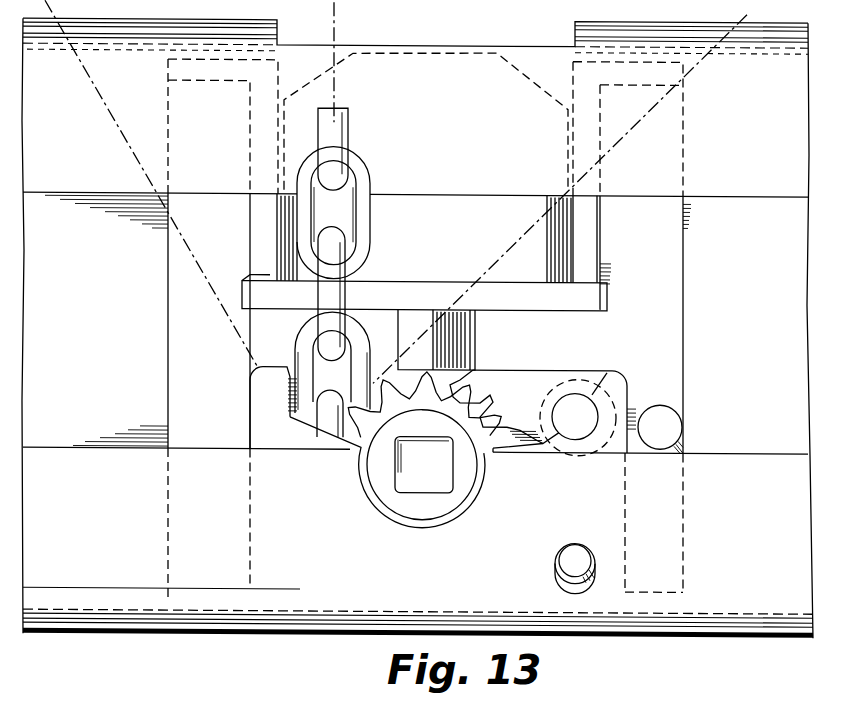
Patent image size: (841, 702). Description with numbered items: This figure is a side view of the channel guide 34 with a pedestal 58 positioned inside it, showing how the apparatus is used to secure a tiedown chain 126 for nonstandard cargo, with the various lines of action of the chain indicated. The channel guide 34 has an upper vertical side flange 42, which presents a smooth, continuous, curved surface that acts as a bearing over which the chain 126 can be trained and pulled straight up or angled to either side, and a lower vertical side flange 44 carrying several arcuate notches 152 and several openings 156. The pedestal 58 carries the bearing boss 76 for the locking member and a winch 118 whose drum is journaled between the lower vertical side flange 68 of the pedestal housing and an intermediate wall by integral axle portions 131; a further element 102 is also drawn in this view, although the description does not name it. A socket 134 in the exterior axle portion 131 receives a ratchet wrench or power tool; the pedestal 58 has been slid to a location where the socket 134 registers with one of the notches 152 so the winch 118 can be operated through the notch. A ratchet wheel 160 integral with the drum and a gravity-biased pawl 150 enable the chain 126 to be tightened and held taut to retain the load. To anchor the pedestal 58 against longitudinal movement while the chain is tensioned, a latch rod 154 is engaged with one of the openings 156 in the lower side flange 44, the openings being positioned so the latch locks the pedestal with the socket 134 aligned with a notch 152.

The channel guide 34 is at (104, 633).
The upper vertical side flange 42 is at (452, 128).
The lower vertical side flange 44 is at (112, 509).
The pedestal 58 is at (683, 266).
The lower vertical side flange 68 is at (288, 434).
The bearing boss 76 is at (492, 245).
The roller 102 is at (670, 418).
The winch 118 is at (330, 391).
The chain 126 is at (368, 178).
The axle portions 131 is at (468, 485).
The socket 134 is at (425, 480).
The gravity-biased pawl 150 is at (547, 376).
The arcuate notches 152 is at (367, 481).
The latch rod 154 is at (563, 563).
The openings 156 is at (592, 571).
The ratchet wheel 160 is at (473, 370).